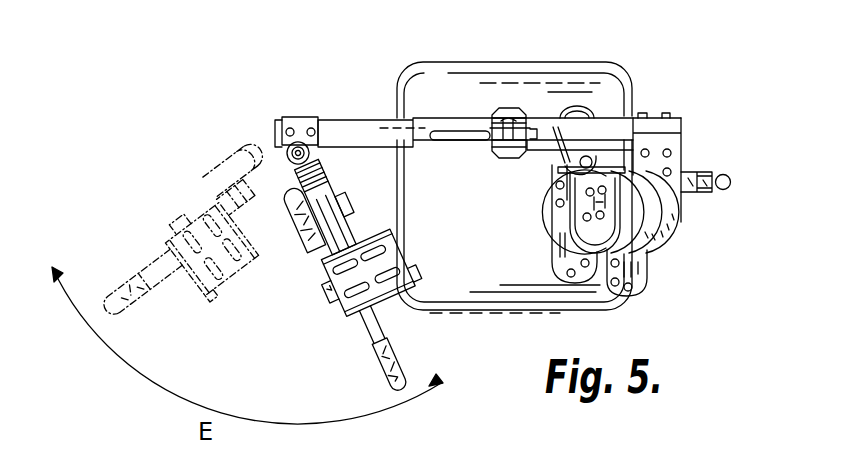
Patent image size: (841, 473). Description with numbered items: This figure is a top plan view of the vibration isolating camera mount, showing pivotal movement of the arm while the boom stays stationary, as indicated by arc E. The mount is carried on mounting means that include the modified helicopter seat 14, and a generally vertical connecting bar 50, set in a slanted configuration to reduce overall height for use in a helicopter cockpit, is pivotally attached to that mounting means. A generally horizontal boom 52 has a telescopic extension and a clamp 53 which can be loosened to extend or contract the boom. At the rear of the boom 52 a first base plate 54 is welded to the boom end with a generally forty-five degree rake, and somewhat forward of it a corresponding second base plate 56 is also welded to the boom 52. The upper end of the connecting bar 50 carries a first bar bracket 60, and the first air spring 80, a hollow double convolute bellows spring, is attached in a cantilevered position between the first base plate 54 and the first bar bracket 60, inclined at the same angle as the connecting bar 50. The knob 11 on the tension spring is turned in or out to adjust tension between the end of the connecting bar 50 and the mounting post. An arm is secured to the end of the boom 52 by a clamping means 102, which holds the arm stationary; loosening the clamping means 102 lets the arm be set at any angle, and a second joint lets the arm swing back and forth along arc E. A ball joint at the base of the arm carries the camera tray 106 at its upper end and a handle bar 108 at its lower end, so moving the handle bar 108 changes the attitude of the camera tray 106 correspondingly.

The modified helicopter seat 14 is at (402, 66).
The horizontal boom 52 is at (445, 117).
The clamp 53 is at (518, 112).
The second base plate 56 is at (583, 148).
The first base plate 54 is at (682, 152).
The knob 11 is at (727, 175).
The first air spring 80 is at (668, 222).
The first bar bracket 60 is at (612, 222).
The connecting bar 50 is at (553, 250).
The clamping means 102 is at (295, 121).
The camera tray 106 is at (332, 295).
The handle bar 108 is at (392, 353).